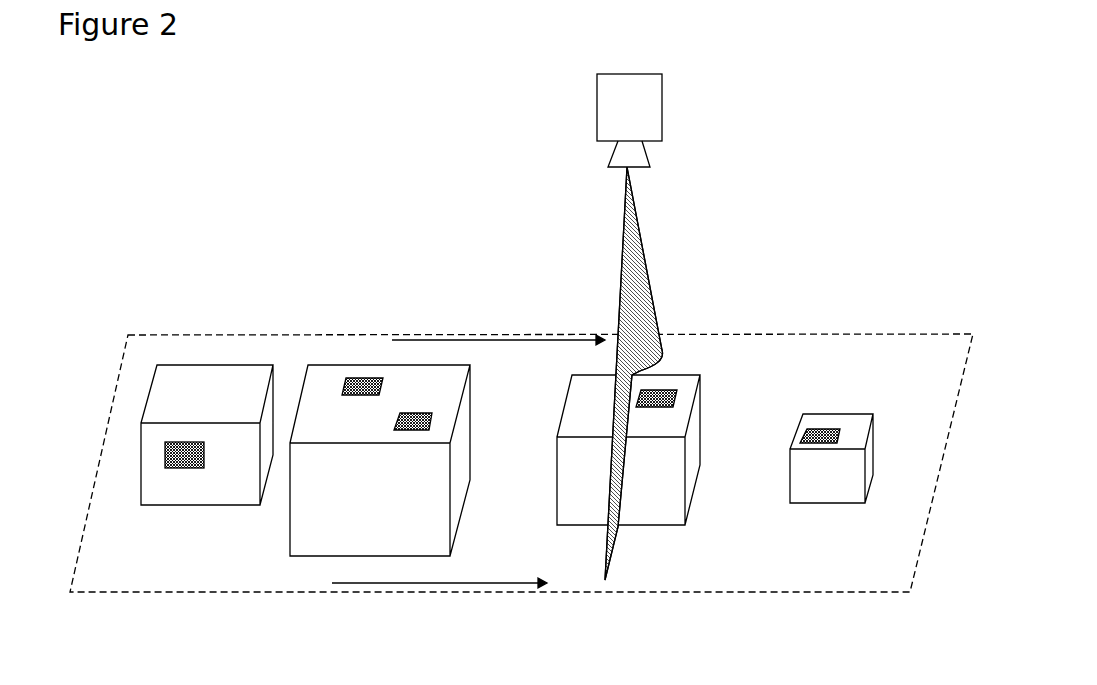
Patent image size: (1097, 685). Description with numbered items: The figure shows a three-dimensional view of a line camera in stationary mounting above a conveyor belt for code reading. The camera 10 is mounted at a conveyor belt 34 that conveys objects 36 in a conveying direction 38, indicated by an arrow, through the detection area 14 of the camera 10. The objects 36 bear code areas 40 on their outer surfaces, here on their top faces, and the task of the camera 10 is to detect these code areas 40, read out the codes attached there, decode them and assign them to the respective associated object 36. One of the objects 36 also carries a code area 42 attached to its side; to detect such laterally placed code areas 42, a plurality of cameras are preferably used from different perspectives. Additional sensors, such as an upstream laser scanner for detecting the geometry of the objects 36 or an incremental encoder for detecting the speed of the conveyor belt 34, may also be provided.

The camera 10 is at (648, 112).
The detection area 14 is at (633, 312).
The conveyor belt 34 is at (877, 593).
The objects 36 is at (165, 380).
The conveying direction 38 is at (420, 583).
The code areas 40 is at (410, 417).
The code areas attached to the side 42 is at (175, 456).